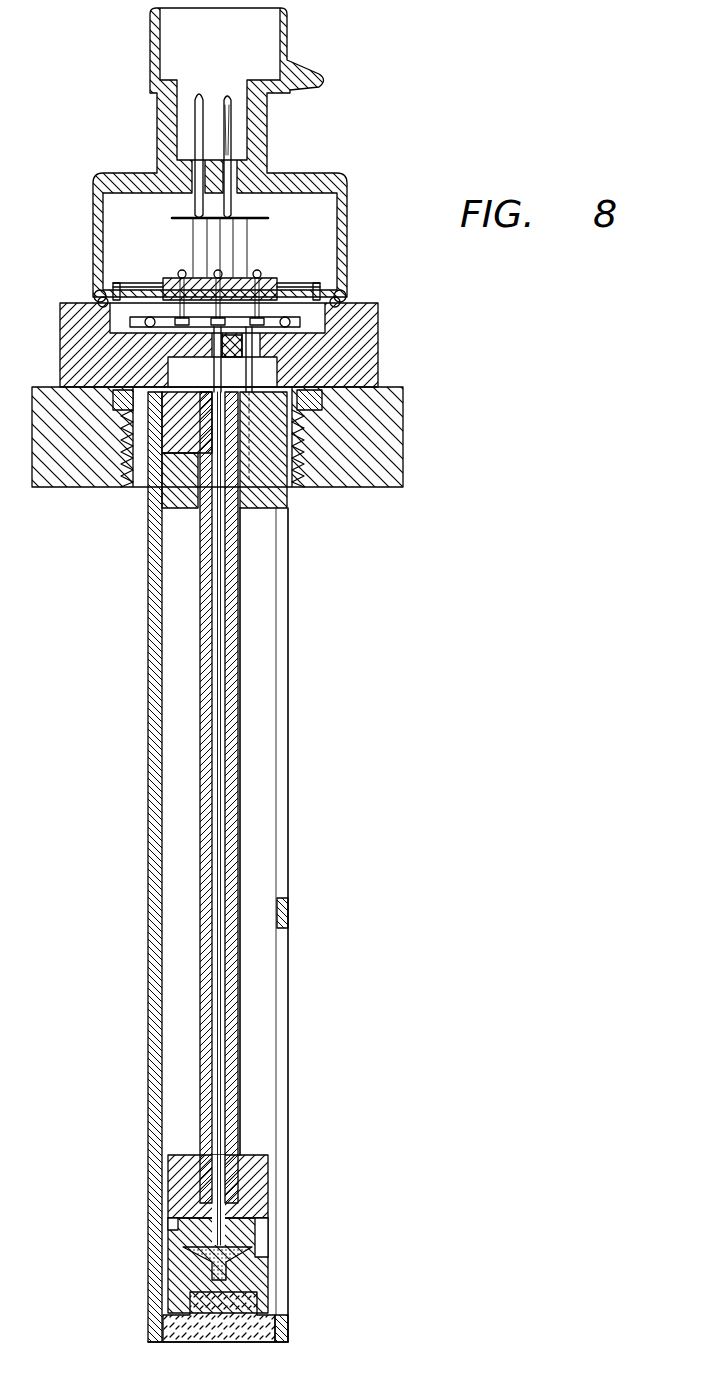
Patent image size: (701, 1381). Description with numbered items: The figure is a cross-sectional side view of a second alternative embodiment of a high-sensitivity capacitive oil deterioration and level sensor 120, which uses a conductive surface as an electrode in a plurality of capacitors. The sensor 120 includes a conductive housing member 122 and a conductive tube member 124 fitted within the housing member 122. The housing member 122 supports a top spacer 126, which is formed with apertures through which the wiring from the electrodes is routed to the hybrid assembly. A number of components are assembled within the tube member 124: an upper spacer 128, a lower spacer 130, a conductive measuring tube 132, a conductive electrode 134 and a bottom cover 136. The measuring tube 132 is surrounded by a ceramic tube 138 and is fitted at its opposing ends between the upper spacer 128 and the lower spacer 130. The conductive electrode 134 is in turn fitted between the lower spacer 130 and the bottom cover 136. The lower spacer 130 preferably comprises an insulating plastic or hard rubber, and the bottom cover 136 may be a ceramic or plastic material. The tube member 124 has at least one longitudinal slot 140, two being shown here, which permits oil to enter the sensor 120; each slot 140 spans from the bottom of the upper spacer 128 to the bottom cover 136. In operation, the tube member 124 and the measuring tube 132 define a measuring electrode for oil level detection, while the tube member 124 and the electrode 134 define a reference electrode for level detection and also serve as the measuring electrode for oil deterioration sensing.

The high-sensitivity capacitive oil deterioration and level sensor 120 is at (92, 137).
The conductive housing member 122 is at (65, 350).
The conductive tube member 124 is at (150, 630).
The top spacer 126 is at (285, 342).
The upper spacer 128 is at (172, 484).
The lower spacer 130 is at (180, 1180).
The conductive measuring tube 132 is at (203, 787).
The conductive electrode 134 is at (252, 1264).
The bottom cover 136 is at (178, 1327).
The ceramic tube 138 is at (202, 898).
The longitudinal slot 140 is at (290, 703).